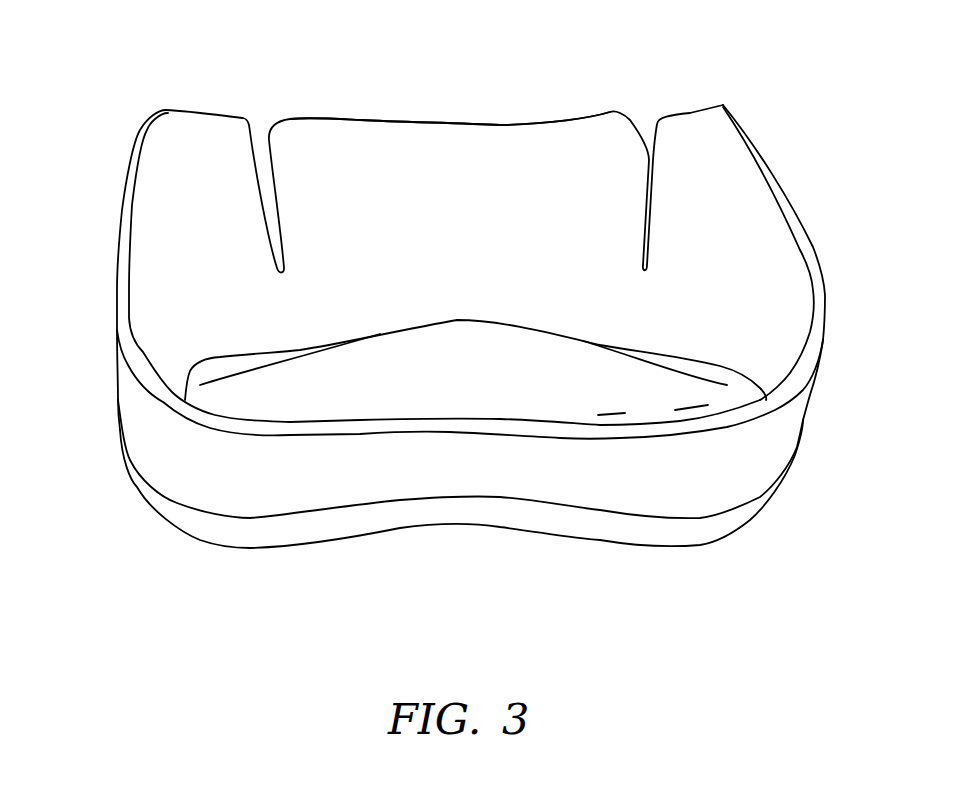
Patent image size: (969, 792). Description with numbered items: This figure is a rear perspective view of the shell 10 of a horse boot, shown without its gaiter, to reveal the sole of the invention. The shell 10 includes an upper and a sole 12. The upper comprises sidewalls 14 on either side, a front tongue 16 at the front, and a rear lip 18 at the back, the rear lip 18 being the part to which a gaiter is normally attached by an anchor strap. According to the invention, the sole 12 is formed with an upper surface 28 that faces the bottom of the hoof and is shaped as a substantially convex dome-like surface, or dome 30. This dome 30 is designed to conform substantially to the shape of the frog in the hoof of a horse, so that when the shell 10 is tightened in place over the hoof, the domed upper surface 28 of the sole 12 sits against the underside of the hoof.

The shell 10 is at (533, 112).
The sole 12 is at (715, 533).
The sidewalls 14 is at (133, 165).
The front tongue 16 is at (360, 120).
The rear lip 18 is at (413, 422).
The upper surface 28 is at (653, 411).
The dome 30 is at (447, 333).